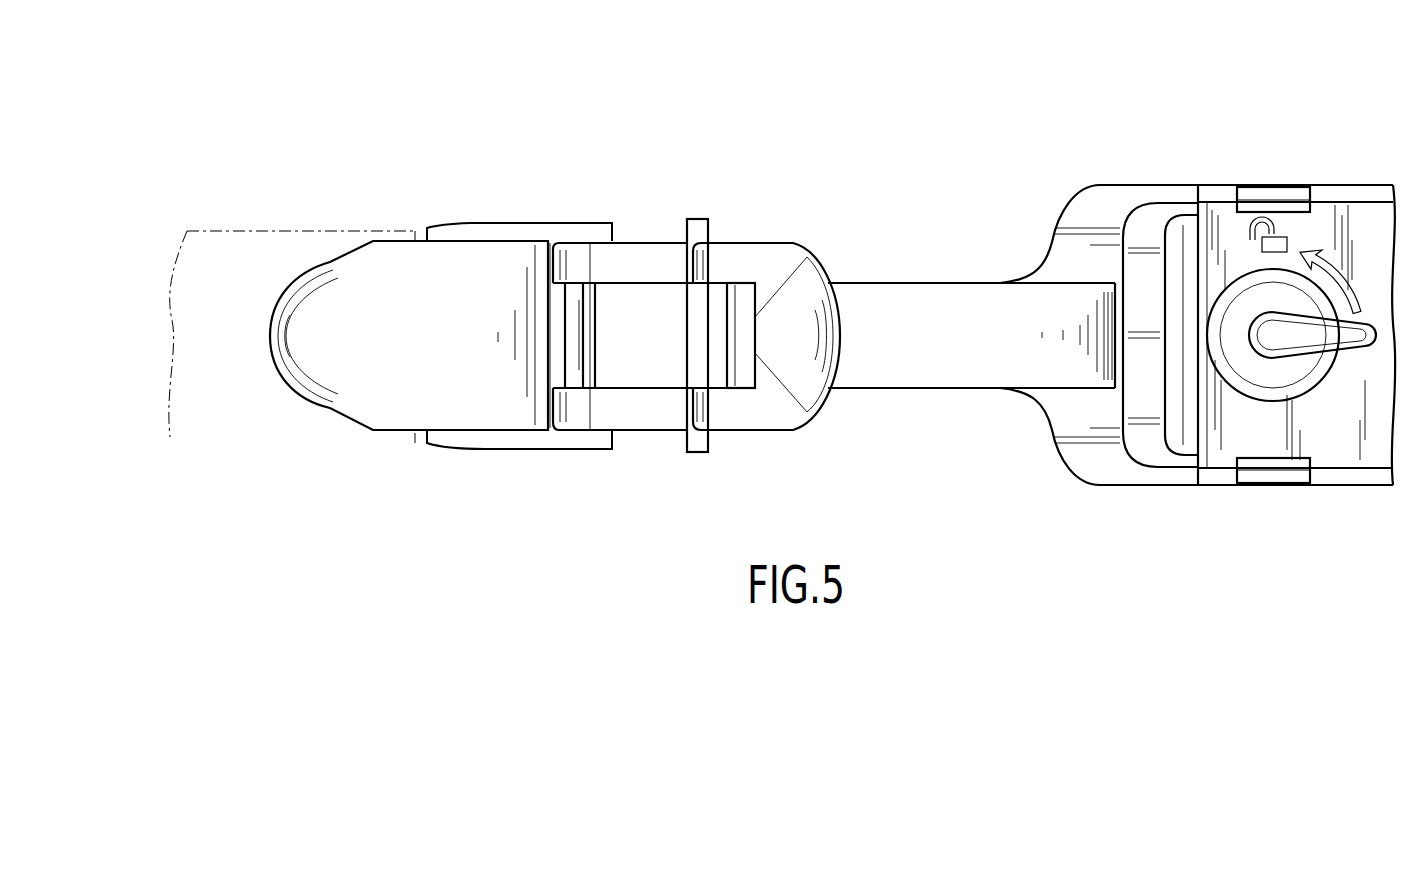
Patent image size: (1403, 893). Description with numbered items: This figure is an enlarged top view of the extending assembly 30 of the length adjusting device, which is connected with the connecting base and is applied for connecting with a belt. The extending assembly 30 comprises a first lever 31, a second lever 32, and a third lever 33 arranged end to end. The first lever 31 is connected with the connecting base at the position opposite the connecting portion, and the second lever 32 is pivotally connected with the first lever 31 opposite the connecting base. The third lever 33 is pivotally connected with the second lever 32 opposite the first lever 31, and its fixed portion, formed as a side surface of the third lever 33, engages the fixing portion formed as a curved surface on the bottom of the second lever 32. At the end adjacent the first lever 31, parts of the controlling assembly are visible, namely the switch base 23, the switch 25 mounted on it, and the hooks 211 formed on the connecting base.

The extending assembly 30 is at (573, 147).
The first lever 31 is at (933, 303).
The second lever 32 is at (653, 235).
The third lever 33 is at (307, 263).
The switch base 23 is at (1373, 210).
The hooks 211 is at (1267, 195).
The switch 25 is at (1312, 387).